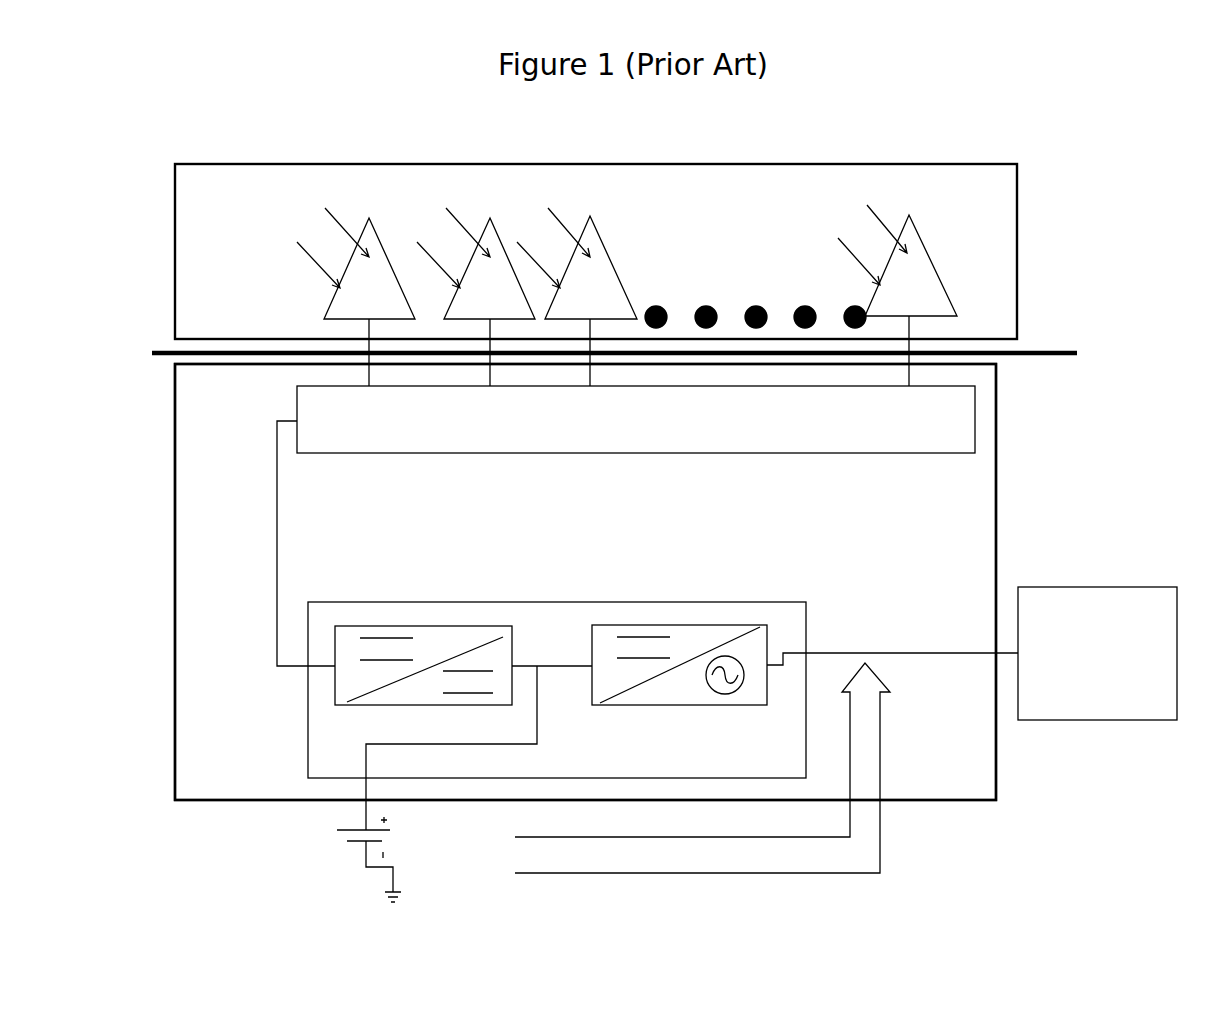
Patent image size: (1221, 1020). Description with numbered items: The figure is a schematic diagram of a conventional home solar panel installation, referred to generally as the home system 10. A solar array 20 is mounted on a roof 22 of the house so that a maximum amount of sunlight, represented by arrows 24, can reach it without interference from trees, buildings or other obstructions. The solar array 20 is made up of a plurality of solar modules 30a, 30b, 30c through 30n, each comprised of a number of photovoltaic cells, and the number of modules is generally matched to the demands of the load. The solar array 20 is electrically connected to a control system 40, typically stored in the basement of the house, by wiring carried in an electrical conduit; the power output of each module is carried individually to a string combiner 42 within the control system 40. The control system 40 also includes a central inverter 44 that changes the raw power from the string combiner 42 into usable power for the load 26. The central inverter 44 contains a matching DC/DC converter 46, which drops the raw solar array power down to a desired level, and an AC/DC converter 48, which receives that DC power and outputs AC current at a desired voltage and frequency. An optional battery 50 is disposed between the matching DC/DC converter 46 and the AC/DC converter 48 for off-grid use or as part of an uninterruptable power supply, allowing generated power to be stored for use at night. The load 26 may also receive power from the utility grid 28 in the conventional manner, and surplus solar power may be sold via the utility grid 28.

The home system 10 is at (139, 691).
The solar array 20 is at (201, 163).
The roof 22 is at (1055, 350).
The sunlight 24 is at (318, 256).
The load 26 is at (1055, 587).
The utility grid 28 is at (878, 856).
The solar module 30a is at (382, 240).
The solar module 30b is at (497, 240).
The solar module 30c is at (597, 228).
The solar module 30n is at (925, 250).
The control system 40 is at (996, 425).
The string combiner 42 is at (790, 430).
The central inverter 44 is at (537, 612).
The matching DC/DC converter 46 is at (433, 633).
The AC/DC converter 48 is at (723, 630).
The battery 50 is at (395, 832).